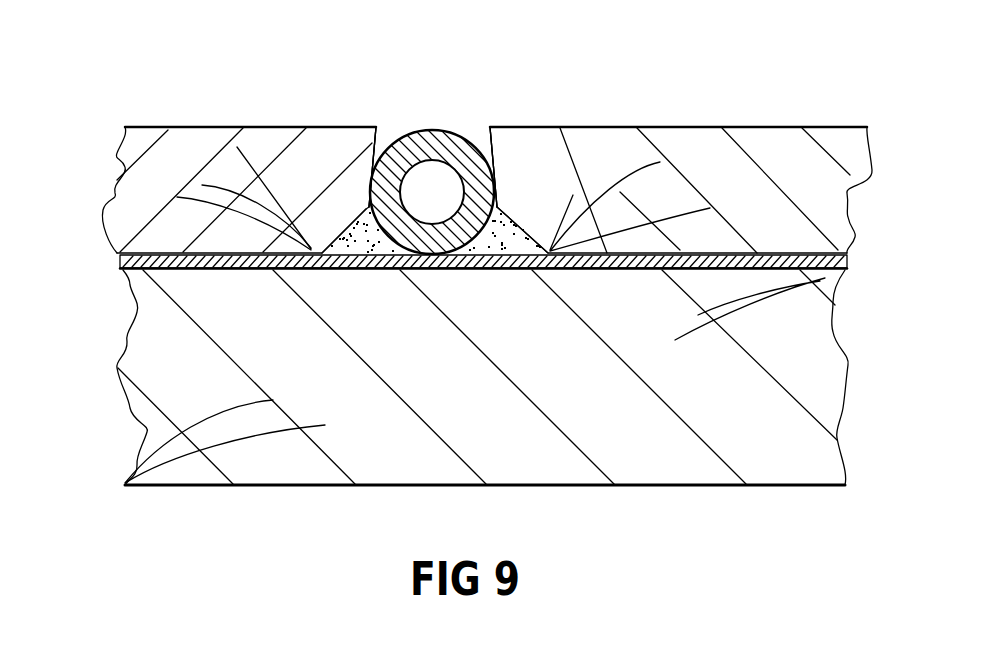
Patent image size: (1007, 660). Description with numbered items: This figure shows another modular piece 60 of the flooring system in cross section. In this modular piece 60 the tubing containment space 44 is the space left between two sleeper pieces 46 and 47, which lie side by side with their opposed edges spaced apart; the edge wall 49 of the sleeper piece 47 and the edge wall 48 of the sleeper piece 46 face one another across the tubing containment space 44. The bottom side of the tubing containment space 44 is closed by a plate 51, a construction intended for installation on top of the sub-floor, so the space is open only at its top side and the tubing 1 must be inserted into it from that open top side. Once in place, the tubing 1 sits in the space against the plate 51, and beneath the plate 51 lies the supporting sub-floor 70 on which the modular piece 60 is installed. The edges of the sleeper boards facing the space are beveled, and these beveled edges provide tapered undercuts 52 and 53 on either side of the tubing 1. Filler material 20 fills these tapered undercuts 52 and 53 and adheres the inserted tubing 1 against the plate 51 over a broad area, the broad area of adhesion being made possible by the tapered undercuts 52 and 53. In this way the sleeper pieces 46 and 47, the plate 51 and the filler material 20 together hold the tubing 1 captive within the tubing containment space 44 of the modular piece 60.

The modular piece 60 is at (158, 92).
The tubing containment space 44 is at (475, 95).
The tubing 1 is at (450, 131).
The left panel edge wall 49 is at (368, 187).
The right panel edge wall 48 is at (494, 190).
The sleeper piece 47 is at (150, 203).
The sleeper piece 46 is at (807, 192).
The tapered undercut 53 is at (358, 268).
The tapered undercut 52 is at (521, 242).
The filler material 20 is at (376, 238).
The plate 51 is at (436, 270).
The substrate 70 is at (741, 487).